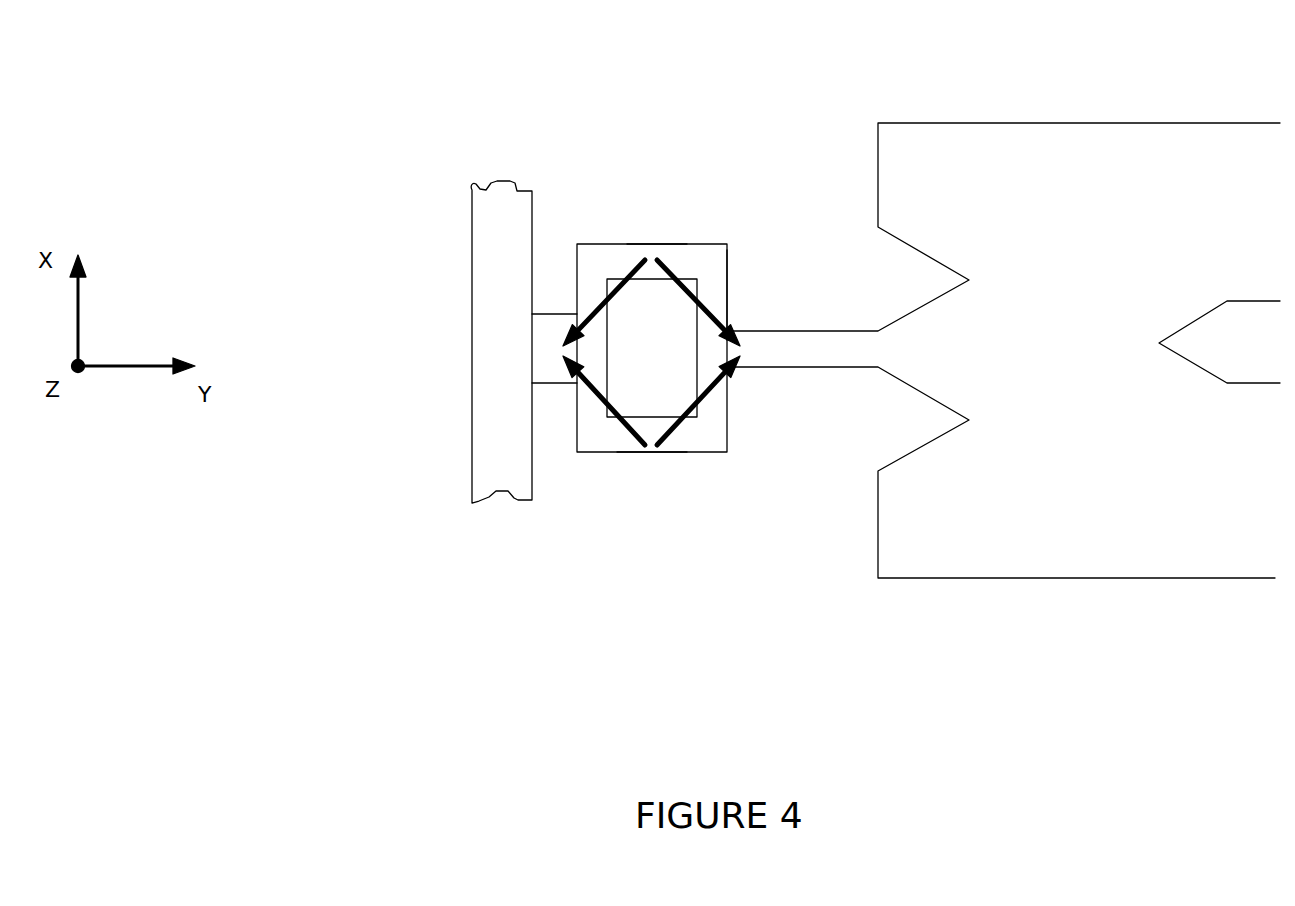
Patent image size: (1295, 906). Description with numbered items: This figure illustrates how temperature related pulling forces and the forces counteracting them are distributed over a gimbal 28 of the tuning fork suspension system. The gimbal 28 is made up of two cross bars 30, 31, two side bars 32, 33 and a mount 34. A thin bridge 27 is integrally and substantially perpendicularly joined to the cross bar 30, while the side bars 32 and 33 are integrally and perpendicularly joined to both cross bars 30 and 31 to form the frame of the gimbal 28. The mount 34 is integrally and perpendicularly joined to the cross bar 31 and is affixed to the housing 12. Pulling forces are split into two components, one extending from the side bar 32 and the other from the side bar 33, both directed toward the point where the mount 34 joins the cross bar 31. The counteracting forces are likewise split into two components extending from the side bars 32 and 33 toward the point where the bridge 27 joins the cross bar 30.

The housing 12 is at (500, 492).
The bridge 27 is at (845, 368).
The gimbal 28 is at (642, 244).
The cross bar 30 is at (727, 298).
The cross bar 31 is at (576, 286).
The side bar 32 is at (648, 453).
The side bar 33 is at (657, 244).
The mount 34 is at (548, 384).